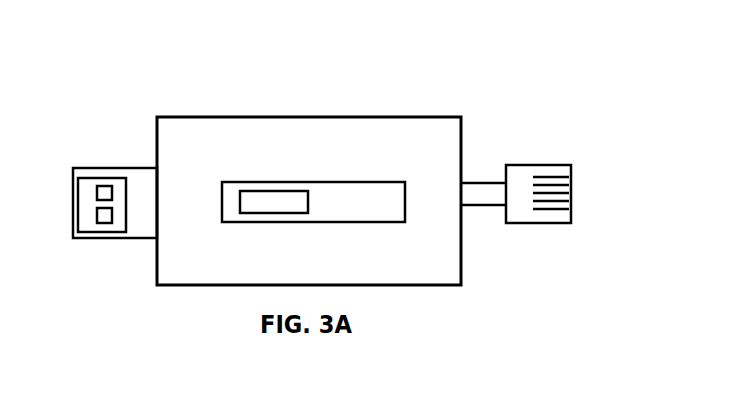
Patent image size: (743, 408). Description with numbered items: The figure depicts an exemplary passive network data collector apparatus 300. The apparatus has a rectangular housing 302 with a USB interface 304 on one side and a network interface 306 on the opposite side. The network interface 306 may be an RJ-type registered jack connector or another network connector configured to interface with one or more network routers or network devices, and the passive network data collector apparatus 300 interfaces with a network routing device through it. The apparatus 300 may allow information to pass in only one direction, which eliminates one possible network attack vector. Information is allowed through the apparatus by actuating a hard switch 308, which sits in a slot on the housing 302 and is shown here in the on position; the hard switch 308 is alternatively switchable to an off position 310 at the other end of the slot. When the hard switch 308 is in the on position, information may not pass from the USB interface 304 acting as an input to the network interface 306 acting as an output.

The passive network data collector apparatus 300 is at (612, 124).
The housing / body 302 is at (155, 114).
The USB interface 304 is at (93, 163).
The network interface 306 is at (546, 160).
The hard switch 308 is at (270, 185).
The off position 310 is at (363, 203).